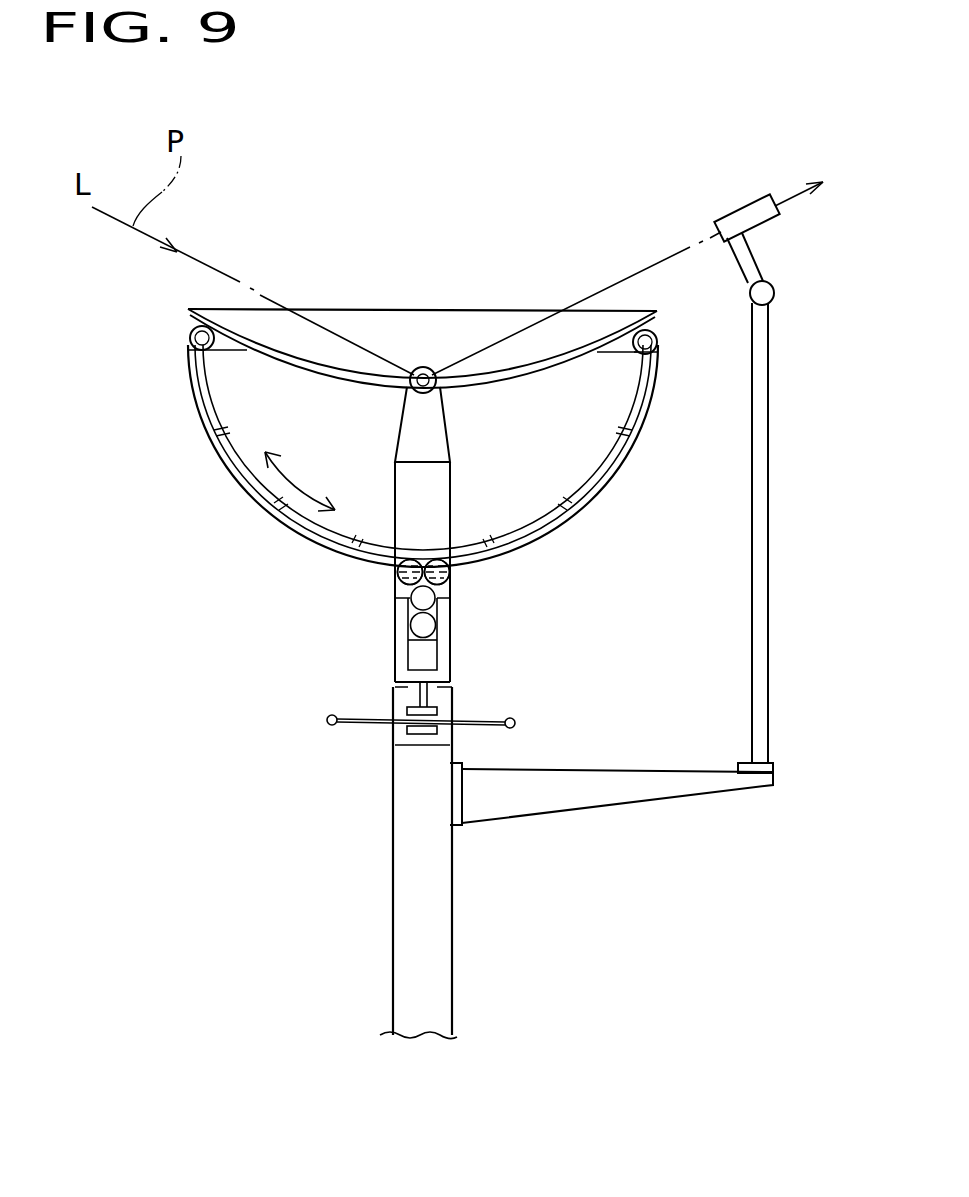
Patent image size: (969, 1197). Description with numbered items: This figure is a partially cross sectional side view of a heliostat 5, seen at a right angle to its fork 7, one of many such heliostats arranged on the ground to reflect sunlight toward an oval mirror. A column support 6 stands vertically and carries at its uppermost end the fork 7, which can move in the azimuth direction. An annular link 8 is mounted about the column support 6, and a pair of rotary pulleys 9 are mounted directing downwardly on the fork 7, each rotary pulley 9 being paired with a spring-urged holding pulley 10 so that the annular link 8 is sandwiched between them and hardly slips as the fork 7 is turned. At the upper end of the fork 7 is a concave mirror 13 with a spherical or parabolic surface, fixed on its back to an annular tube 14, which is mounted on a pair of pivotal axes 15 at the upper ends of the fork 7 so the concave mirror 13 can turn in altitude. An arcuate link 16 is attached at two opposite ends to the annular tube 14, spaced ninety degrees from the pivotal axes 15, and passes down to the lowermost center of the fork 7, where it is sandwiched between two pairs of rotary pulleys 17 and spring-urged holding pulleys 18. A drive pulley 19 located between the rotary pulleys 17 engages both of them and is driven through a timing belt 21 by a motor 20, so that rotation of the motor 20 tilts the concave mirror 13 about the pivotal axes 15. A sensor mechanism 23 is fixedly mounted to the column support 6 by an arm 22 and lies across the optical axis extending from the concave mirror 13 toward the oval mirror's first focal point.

The heliostat 5 is at (180, 586).
The column support 6 is at (394, 933).
The fork 7 is at (433, 438).
The annular link 8 is at (366, 726).
The rotary pulley 9 is at (393, 692).
The holding pulley 10 is at (415, 748).
The concave mirror 13 is at (582, 348).
The annular tube 14 is at (658, 336).
The pivotal axes 15 is at (423, 367).
The arcuate link 16 is at (607, 487).
The rotary pulley 17 is at (393, 578).
The holding pulley 18 is at (447, 575).
The drive pulley 19 is at (394, 594).
The motor 20 is at (440, 633).
The timing belt 21 is at (440, 615).
The arm 22 is at (770, 572).
The sensor mechanism 23 is at (752, 193).